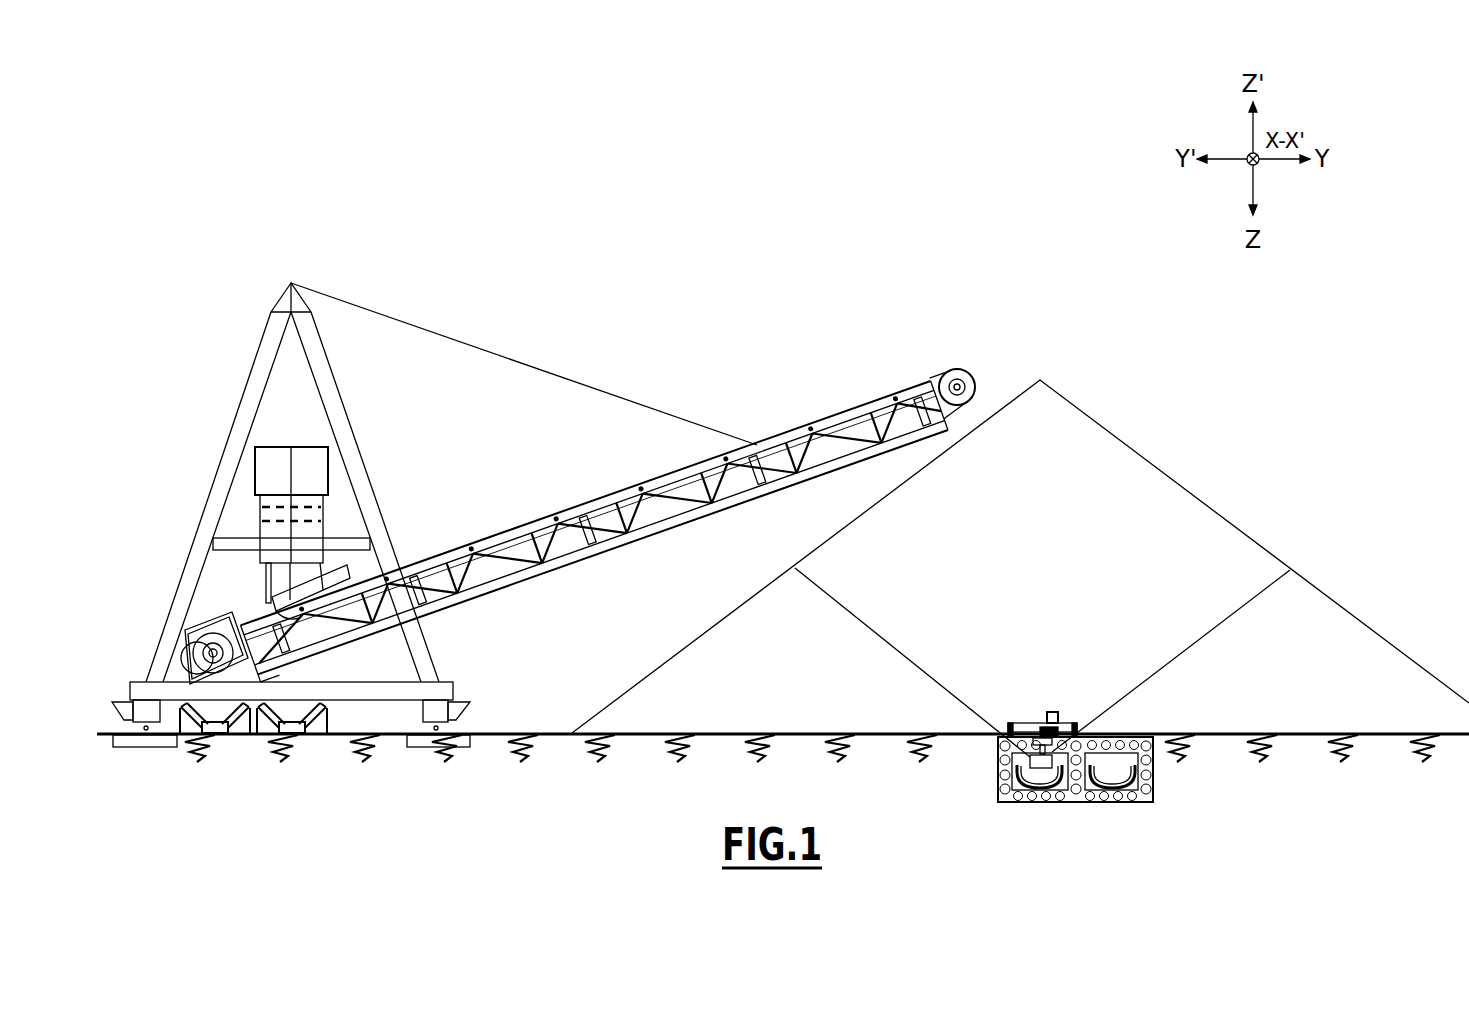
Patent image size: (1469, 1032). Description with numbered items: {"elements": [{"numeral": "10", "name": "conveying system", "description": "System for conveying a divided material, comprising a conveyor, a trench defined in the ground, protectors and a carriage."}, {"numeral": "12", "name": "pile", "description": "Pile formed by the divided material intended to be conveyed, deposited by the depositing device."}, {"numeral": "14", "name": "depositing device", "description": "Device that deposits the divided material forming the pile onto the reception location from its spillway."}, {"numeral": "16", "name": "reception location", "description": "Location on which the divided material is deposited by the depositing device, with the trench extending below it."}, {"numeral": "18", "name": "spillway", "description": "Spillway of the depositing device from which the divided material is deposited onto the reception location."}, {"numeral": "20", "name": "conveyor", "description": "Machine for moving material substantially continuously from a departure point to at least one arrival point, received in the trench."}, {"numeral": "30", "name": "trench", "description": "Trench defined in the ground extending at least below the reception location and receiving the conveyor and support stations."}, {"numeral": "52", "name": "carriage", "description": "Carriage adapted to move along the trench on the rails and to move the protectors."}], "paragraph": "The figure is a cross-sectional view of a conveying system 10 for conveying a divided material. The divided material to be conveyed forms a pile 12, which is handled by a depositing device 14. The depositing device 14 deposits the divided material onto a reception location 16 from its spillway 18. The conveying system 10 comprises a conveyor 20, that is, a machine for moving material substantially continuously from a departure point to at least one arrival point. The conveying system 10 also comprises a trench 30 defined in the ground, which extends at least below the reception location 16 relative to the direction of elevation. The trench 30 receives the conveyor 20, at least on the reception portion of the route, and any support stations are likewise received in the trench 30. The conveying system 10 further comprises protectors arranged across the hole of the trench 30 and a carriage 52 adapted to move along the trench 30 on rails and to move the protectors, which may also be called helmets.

The reclaiming gallery 10 is at (1109, 751).
The stockpile 12 is at (1190, 488).
The stacker 14 is at (586, 485).
The ground 16 is at (968, 740).
The discharge head pulley 18 is at (973, 372).
The reclaiming conveyor 20 is at (1057, 789).
The second conveyor channel 30 is at (1128, 752).
The carriage 52 is at (1072, 711).